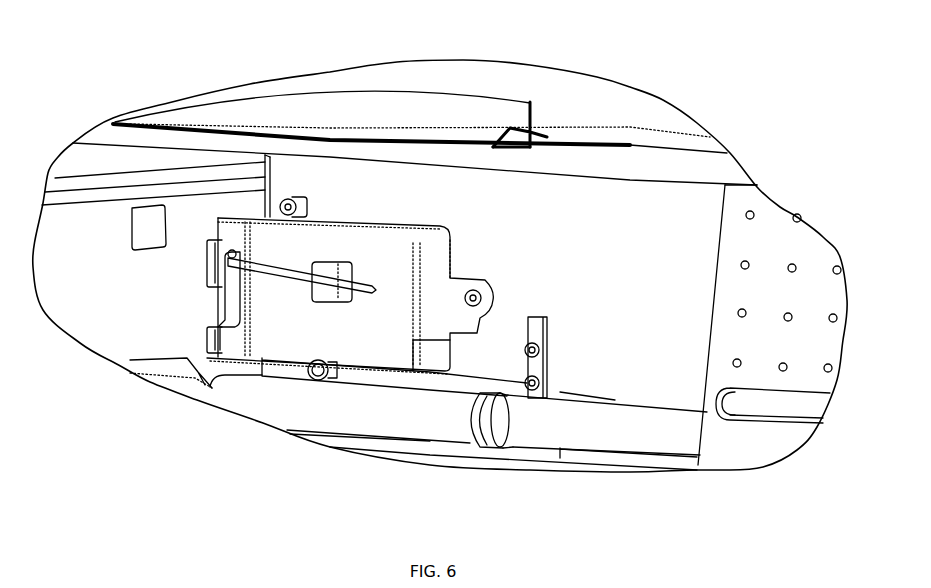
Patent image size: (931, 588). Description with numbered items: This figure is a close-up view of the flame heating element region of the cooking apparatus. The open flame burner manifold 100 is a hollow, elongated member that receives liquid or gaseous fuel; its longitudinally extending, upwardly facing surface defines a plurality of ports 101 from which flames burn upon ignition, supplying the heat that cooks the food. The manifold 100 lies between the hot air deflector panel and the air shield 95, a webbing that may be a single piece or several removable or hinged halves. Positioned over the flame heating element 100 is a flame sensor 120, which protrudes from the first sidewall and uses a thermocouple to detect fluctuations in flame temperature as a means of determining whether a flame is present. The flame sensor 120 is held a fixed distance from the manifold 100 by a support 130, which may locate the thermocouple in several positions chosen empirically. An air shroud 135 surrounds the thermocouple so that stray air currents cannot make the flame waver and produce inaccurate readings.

The air shield 95 is at (775, 272).
The open flame burner manifold 100 is at (637, 428).
The ports 101 is at (573, 397).
The flame sensor 120 is at (284, 262).
The support 130 is at (327, 268).
The air shroud 135 is at (392, 258).